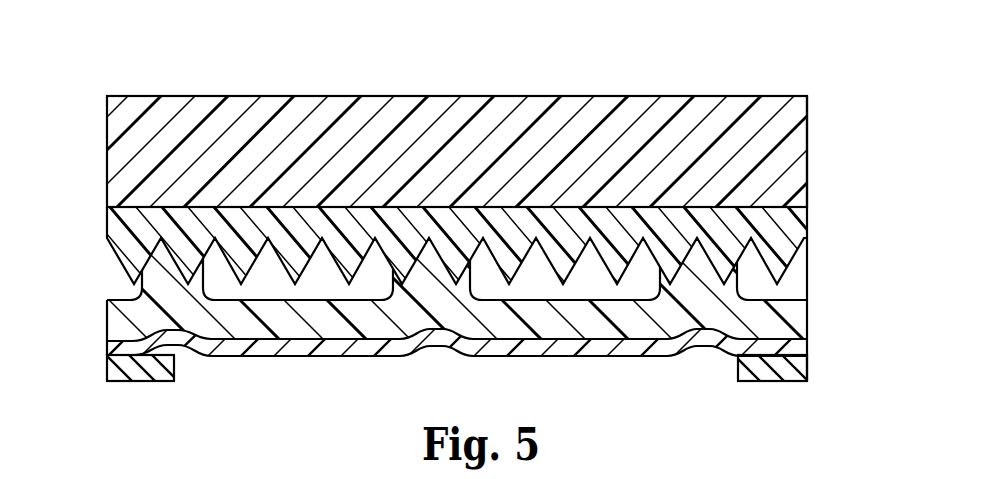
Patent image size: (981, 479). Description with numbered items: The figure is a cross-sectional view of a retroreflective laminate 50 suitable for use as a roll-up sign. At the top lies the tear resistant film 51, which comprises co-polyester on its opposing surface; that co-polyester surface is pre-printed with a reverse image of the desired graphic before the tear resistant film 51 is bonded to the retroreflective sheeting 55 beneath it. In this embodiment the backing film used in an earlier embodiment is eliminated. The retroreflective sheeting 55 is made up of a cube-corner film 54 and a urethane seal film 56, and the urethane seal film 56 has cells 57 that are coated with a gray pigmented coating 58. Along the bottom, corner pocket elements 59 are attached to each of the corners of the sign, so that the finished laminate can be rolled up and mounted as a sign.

The retroreflective laminate 50 is at (708, 73).
The tear resistant film 51 is at (210, 131).
The cube-corner film 54 is at (147, 227).
The retroreflective sheeting 55 is at (815, 335).
The urethane seal film 56 is at (138, 307).
The cells 57 is at (336, 296).
The gray pigmented coating 58 is at (134, 347).
The corner pocket elements 59 is at (133, 372).